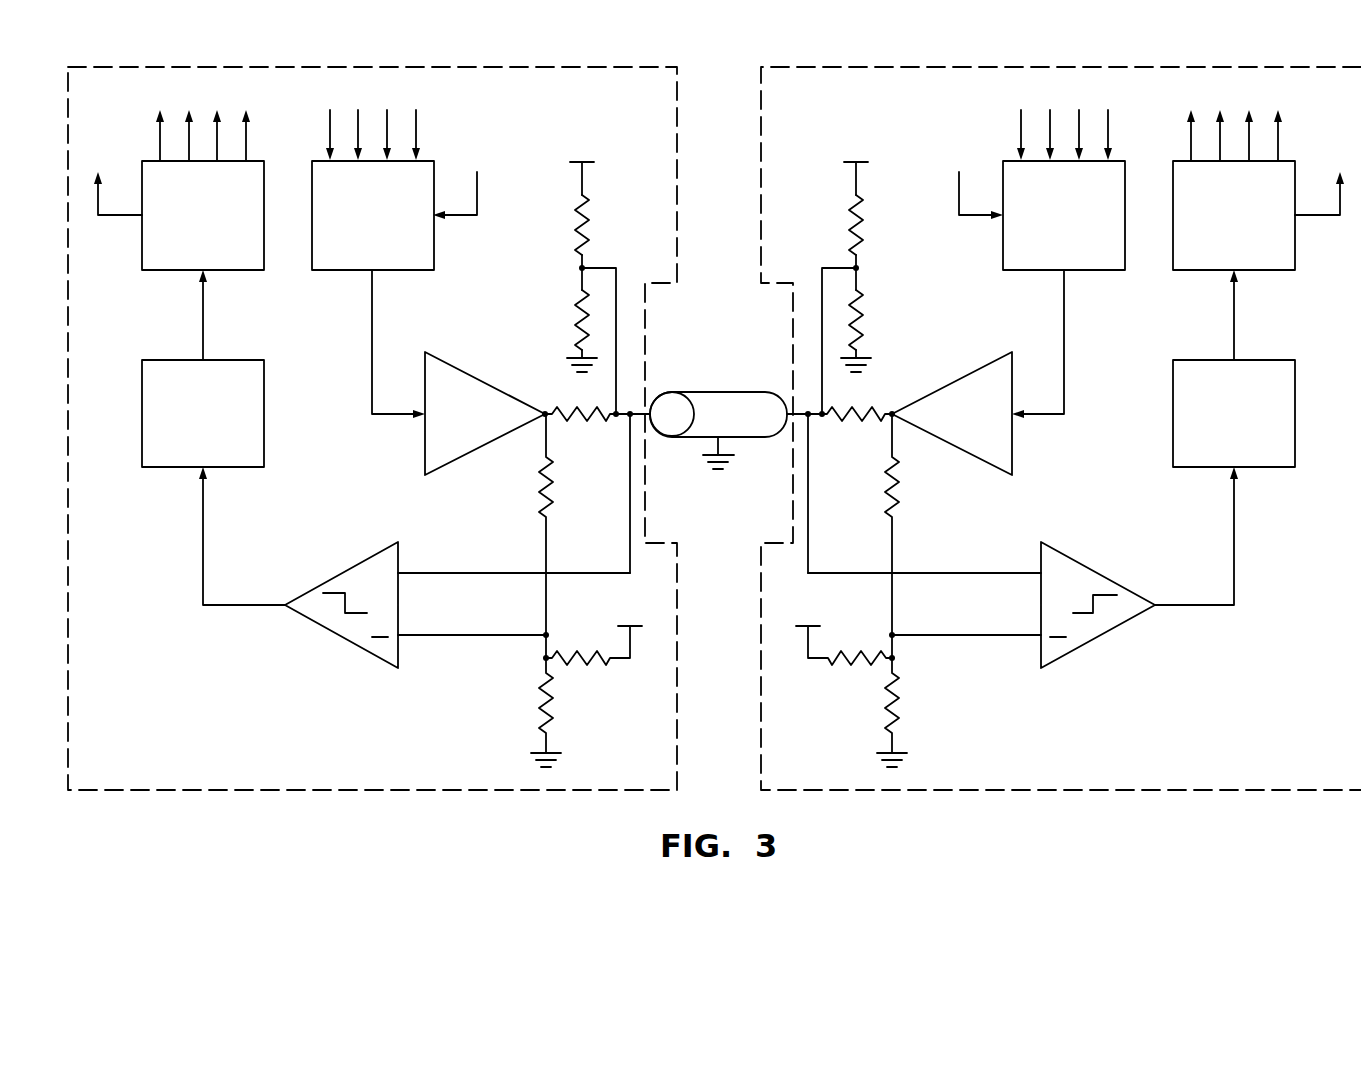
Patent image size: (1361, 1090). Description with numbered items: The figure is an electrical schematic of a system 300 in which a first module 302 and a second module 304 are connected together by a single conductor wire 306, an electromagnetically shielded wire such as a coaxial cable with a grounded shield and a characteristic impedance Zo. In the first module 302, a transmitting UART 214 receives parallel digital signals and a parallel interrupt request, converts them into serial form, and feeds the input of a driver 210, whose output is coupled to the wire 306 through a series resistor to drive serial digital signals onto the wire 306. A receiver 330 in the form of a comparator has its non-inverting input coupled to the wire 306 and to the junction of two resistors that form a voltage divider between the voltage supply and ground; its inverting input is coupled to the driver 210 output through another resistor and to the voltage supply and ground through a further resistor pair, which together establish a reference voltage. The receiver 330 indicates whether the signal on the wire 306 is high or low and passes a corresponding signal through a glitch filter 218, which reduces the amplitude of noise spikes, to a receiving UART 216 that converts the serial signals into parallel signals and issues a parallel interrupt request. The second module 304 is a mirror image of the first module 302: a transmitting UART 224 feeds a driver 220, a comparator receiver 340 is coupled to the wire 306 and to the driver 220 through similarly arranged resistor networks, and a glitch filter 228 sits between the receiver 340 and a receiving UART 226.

The system 300 is at (721, 83).
The first module 302 is at (372, 67).
The second module 304 is at (1062, 67).
The driver 210 is at (482, 381).
The driver 220 is at (955, 381).
The transmitting UART 214 is at (347, 271).
The receiving UART 216 is at (176, 271).
The glitch filter 218 is at (140, 411).
The transmitting UART 224 is at (1102, 271).
The receiving UART 226 is at (1272, 271).
The glitch filter 228 is at (1297, 411).
The single conductor wire 306 is at (722, 392).
The receiver 330 is at (343, 571).
The receiver 340 is at (1095, 571).